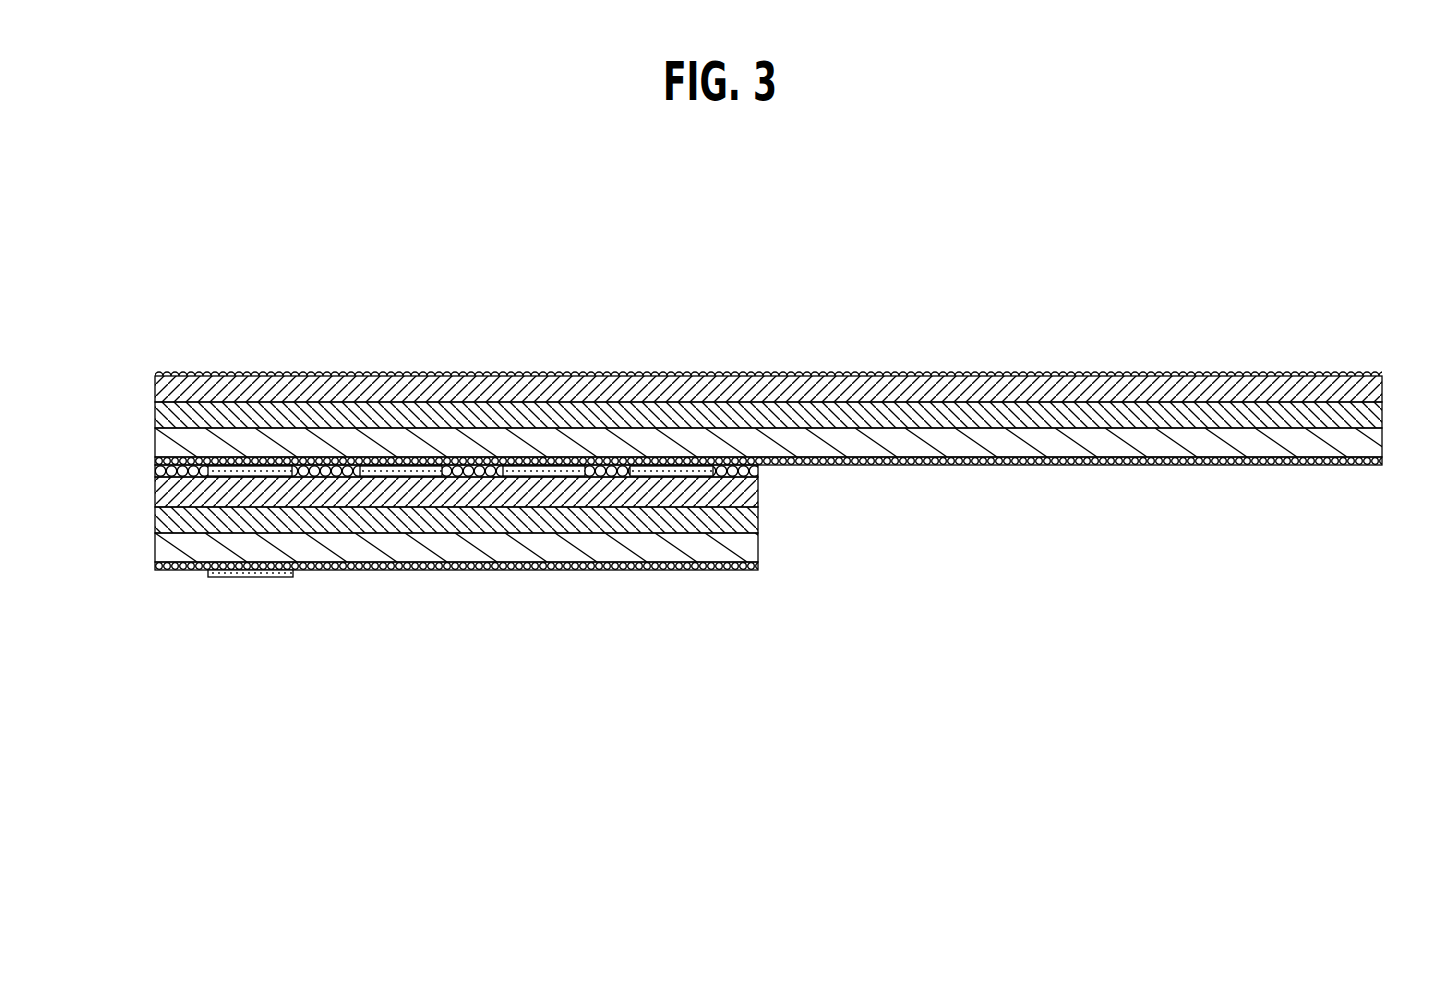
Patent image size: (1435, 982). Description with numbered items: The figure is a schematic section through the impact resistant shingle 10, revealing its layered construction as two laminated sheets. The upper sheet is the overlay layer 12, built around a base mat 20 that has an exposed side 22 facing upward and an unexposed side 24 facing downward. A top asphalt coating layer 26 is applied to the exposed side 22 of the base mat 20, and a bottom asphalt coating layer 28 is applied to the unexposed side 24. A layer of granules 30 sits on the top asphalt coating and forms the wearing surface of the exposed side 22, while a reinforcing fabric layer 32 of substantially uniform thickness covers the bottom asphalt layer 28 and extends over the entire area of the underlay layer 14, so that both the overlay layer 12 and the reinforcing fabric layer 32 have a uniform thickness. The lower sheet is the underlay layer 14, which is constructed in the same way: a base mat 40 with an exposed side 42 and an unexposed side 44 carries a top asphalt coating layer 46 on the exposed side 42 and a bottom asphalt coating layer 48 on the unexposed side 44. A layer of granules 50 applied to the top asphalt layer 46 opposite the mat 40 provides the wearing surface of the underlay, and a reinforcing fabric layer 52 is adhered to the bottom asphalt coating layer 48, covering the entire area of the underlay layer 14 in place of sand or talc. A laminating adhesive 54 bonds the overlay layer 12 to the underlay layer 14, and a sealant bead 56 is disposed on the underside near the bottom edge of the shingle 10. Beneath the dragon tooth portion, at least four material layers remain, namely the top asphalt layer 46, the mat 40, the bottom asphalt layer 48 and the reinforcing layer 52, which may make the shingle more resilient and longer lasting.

The shingle 10 is at (193, 216).
The overlay layer 12 is at (140, 412).
The underlay layer 14 is at (140, 530).
The base mat 20 is at (1380, 409).
The exposed side 22 is at (1085, 331).
The unexposed side 24 is at (1110, 522).
The top asphalt coating layer 26 is at (1380, 384).
The bottom asphalt coating layer 28 is at (1383, 439).
The layer of granules 30 is at (1374, 366).
The reinforcing fabric layer 32 is at (1247, 467).
The base mat 40 is at (743, 520).
The exposed side 42 is at (478, 467).
The unexposed side 44 is at (521, 592).
The top asphalt coating layer 46 is at (733, 492).
The bottom asphalt coating layer 48 is at (695, 553).
The layer of granules 50 is at (155, 474).
The reinforcing fabric layer 52 is at (198, 570).
The laminating adhesive 54 is at (243, 465).
The sealant bead 56 is at (257, 577).